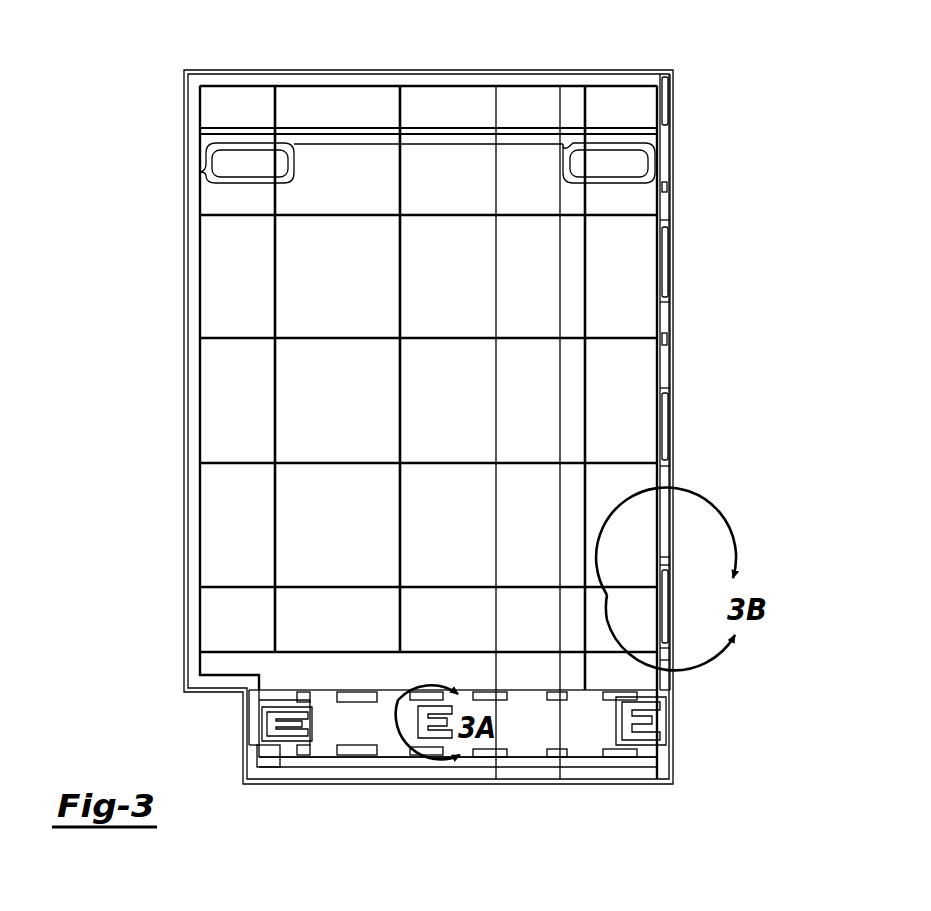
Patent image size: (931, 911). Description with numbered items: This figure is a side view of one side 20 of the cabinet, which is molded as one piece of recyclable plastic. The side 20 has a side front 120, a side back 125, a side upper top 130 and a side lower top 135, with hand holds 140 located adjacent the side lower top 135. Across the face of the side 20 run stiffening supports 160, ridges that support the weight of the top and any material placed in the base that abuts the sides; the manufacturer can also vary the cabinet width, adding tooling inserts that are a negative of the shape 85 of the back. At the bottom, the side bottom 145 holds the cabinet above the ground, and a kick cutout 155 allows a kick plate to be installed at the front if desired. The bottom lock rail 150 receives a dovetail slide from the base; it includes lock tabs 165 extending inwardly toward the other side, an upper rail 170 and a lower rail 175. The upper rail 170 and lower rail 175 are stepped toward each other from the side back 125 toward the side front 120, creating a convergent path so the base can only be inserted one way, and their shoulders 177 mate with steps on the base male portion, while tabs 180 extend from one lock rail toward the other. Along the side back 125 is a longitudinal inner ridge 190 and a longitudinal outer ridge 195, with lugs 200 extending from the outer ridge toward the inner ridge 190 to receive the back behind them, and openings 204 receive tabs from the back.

The side 20 is at (96, 240).
The shape of the back 85 is at (560, 265).
The side front 120 is at (123, 351).
The side back 125 is at (769, 258).
The side upper top 130 is at (618, 70).
The side lower top 135 is at (605, 127).
The hand holds 140 is at (652, 163).
The side bottom 145 is at (741, 727).
The bottom lock rail 150 is at (527, 738).
The kick cutout 155 is at (208, 743).
The stiffening supports 160 is at (403, 280).
The lock tabs 165 is at (290, 737).
The upper rail 170 is at (357, 690).
The lower rail 175 is at (385, 757).
The shoulders 177 is at (377, 692).
The tabs 180 is at (287, 700).
The longitudinal inner ridge 190 is at (655, 428).
The longitudinal outer ridge 195 is at (668, 238).
The lugs 200 is at (668, 605).
The openings 204 is at (667, 188).